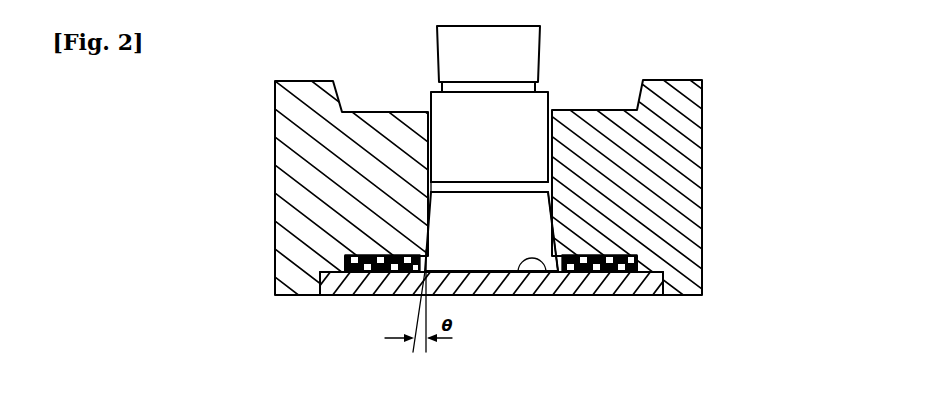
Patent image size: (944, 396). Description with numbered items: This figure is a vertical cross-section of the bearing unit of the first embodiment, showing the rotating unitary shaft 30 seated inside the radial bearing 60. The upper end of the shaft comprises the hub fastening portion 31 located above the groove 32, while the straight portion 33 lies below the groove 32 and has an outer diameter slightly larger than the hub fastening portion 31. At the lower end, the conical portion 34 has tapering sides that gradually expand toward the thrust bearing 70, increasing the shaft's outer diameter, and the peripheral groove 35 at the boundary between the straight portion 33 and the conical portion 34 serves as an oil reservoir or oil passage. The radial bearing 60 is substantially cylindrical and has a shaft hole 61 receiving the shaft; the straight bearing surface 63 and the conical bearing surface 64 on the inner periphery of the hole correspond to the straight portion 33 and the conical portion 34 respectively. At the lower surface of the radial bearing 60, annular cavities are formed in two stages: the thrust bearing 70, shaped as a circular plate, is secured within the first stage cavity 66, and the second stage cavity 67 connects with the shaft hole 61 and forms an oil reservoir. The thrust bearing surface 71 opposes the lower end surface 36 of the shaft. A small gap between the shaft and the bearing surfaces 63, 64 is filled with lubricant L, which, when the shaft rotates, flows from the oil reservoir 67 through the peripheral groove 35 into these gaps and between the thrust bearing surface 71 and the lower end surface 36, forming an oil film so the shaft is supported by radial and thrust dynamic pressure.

The rotating unitary shaft 30 is at (525, 113).
The hub fastening portion 31 is at (520, 62).
The groove 32 is at (443, 88).
The straight portion 33 is at (525, 155).
The conical portion 34 is at (533, 215).
The peripheral groove 35 is at (428, 182).
The lower end surface 36 is at (500, 273).
The radial bearing 60 is at (648, 220).
The shaft hole 61 is at (436, 154).
The straight bearing surface 63 is at (546, 172).
The conical bearing surface 64 is at (553, 242).
The first stage cavity 66 is at (341, 276).
The second stage cavity 67 is at (562, 270).
The thrust bearing 70 is at (590, 282).
The thrust bearing surface 71 is at (531, 272).
The lubricant L is at (618, 293).